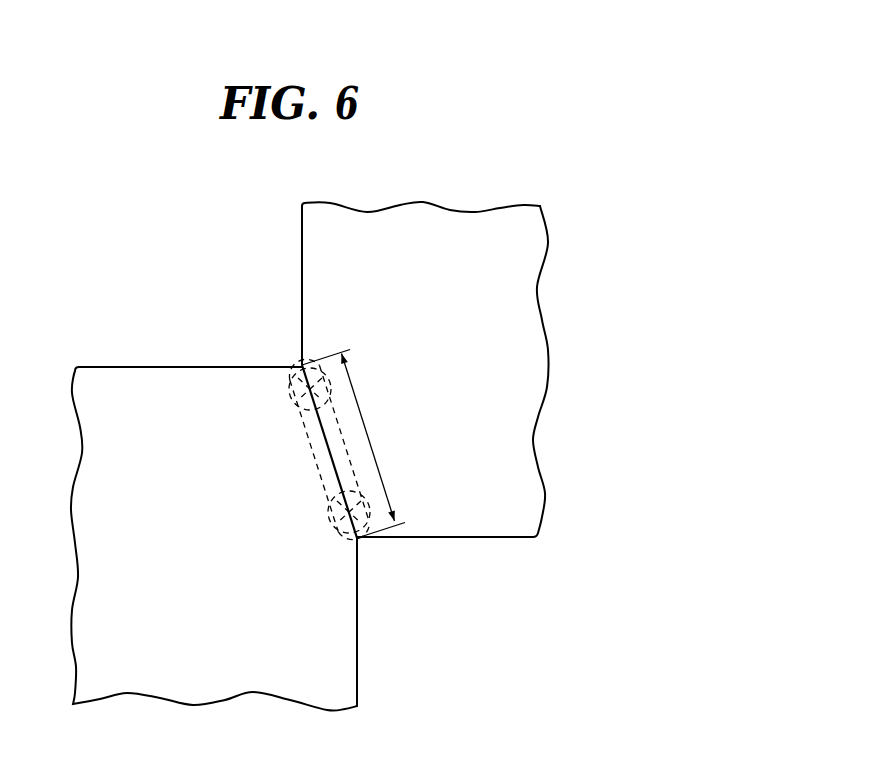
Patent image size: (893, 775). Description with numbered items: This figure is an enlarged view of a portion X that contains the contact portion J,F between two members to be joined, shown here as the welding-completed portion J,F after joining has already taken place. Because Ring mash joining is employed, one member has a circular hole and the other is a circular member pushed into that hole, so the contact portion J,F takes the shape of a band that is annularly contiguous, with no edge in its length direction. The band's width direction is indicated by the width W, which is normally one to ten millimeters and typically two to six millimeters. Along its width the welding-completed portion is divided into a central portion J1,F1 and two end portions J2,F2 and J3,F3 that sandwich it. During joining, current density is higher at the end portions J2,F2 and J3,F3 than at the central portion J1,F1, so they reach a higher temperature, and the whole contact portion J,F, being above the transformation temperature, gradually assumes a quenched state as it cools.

The portion X is at (143, 236).
The contact portion / welding-completed portion J,F is at (278, 345).
The central portion J1,F1 is at (307, 452).
The end portion J2,F2 is at (290, 388).
The end portion J3,F3 is at (332, 532).
The width W is at (353, 444).